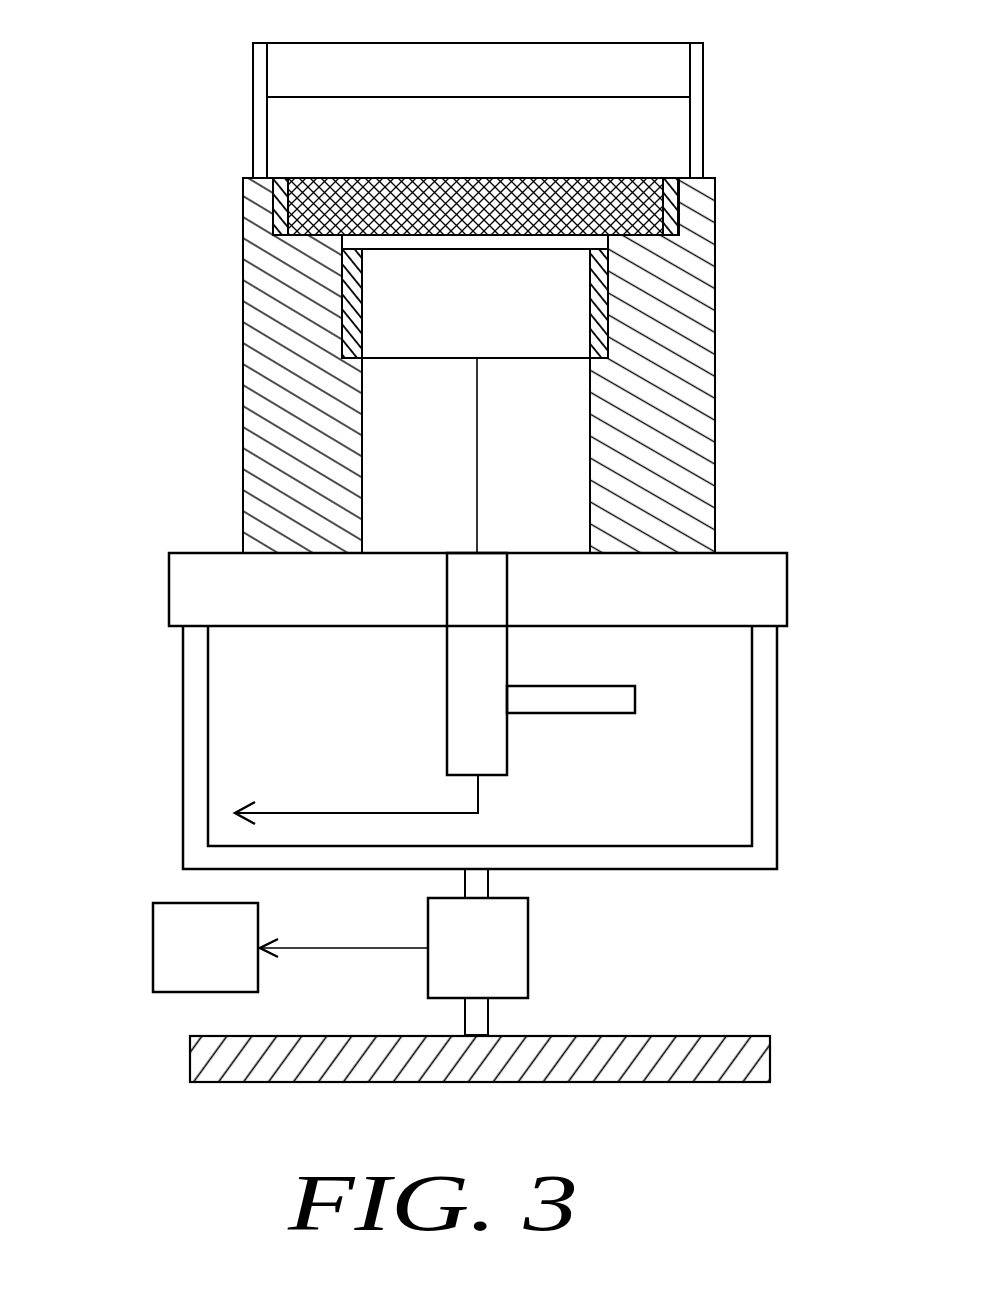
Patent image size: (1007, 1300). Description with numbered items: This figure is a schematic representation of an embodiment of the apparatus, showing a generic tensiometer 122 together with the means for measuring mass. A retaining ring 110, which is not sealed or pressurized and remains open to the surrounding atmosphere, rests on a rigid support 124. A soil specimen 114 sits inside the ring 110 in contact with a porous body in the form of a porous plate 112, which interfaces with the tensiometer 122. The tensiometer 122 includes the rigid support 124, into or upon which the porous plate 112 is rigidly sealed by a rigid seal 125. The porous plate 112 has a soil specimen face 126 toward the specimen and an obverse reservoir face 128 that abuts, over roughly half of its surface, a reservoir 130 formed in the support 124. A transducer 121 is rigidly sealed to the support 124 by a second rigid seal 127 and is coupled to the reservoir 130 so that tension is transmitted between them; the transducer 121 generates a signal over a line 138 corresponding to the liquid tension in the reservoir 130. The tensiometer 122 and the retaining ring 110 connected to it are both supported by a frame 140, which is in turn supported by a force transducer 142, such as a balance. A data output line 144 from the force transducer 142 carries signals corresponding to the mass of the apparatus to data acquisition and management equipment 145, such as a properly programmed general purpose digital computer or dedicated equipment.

The retaining ring 110 is at (697, 50).
The soil specimen 114 is at (408, 112).
The porous plate 112 is at (327, 193).
The tensiometer 122 is at (430, 335).
The rigid support 124 is at (243, 310).
The rigid seal 125 is at (682, 208).
The soil specimen face 126 is at (637, 177).
The obverse reservoir face 128 is at (650, 236).
The reservoir 130 is at (393, 242).
The rigid seal 127 is at (610, 331).
The transducer 121 is at (534, 359).
The line 138 is at (477, 476).
The frame 140 is at (767, 693).
The force transducer 142 is at (528, 936).
The data output line 144 is at (310, 948).
The data acquisition and management equipment 145 is at (153, 940).